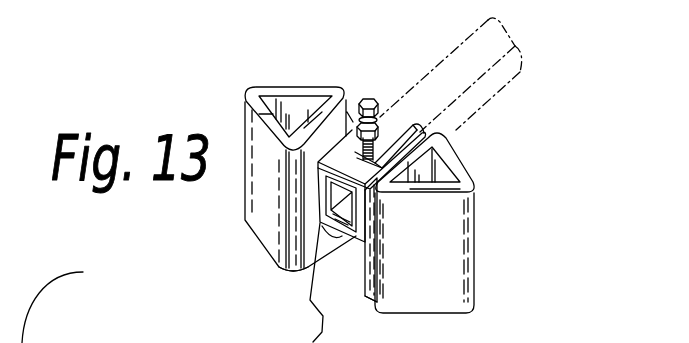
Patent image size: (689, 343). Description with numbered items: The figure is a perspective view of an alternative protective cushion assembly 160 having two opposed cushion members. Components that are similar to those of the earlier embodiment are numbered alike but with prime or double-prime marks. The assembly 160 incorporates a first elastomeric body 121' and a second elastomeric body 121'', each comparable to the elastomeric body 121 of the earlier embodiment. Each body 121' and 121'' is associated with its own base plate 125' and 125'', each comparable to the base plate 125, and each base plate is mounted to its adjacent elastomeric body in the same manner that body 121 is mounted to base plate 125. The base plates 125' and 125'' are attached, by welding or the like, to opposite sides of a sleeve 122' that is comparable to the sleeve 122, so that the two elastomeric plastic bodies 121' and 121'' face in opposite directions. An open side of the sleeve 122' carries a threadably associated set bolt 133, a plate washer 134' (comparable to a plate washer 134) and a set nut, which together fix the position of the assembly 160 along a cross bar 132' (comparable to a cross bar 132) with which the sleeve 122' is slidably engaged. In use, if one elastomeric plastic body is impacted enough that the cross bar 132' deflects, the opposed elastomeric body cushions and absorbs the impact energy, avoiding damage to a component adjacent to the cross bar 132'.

The first elastomeric body 121' is at (240, 215).
The second elastomeric body 121'' is at (444, 238).
The elastomeric body 121 is at (319, 215).
The sleeve 122' is at (372, 220).
The sleeve 122 is at (372, 220).
The base plate 125' is at (280, 295).
The base plate 125'' is at (393, 319).
The base plate 125 is at (337, 305).
The cross bar 132' is at (459, 80).
The rod 132 is at (459, 80).
The bolt 133 is at (370, 98).
The plate washer 134' is at (365, 90).
The clamp pad / nut 134 is at (365, 90).
The protective cushion assembly 160 is at (493, 230).